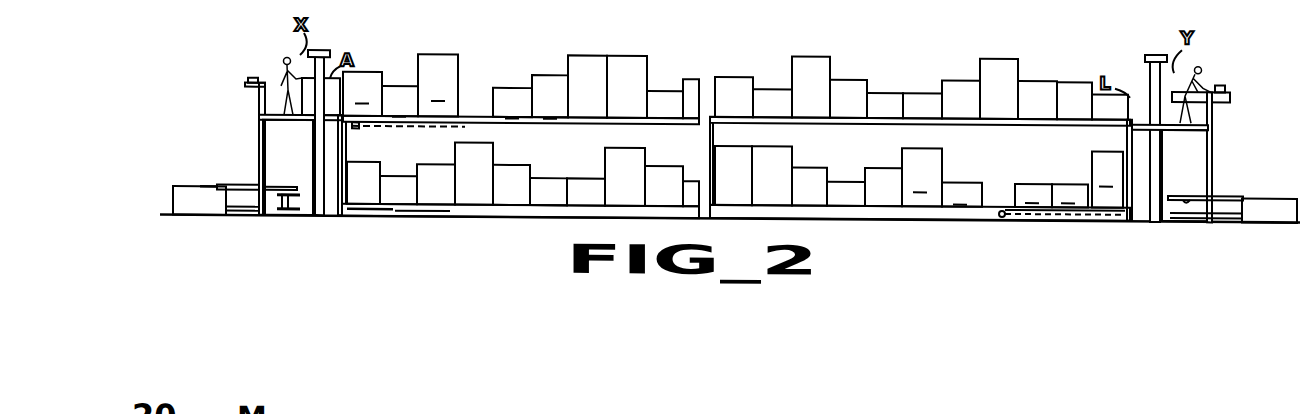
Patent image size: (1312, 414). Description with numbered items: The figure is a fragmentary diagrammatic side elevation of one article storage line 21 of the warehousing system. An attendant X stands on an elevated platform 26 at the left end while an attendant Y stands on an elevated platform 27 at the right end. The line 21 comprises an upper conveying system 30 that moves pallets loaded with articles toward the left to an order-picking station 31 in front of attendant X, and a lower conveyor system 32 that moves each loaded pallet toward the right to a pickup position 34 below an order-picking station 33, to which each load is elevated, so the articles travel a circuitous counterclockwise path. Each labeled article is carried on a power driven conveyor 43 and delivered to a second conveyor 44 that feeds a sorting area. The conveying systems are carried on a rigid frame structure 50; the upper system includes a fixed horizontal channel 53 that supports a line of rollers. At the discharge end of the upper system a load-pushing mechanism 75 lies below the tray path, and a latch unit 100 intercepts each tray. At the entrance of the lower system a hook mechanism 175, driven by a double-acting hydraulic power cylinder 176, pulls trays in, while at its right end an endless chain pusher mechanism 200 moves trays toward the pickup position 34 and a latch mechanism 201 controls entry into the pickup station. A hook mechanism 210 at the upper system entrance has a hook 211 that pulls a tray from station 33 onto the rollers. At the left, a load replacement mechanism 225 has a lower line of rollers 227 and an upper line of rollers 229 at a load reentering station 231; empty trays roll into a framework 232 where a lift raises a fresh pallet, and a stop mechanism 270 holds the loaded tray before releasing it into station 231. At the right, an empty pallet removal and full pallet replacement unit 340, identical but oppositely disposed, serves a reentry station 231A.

The article storage line 21 is at (212, 128).
The elevated platform 26 is at (262, 115).
The elevated platform 27 is at (1211, 115).
The upper conveying system 30 is at (624, 120).
The order-picking station 31 is at (336, 54).
The lower conveyor system 32 is at (561, 209).
The order-picking station 33 is at (1144, 82).
The pickup position 34 is at (1170, 215).
The power driven conveyor 43 is at (274, 82).
The second conveyor 44 is at (247, 85).
The frame structure 50 is at (1118, 138).
The inwardly opening channel 53 is at (889, 121).
The load-pushing mechanism 75 is at (471, 127).
The latch unit 100 is at (364, 129).
The hook mechanism 175 is at (361, 221).
The double-acting hydraulic power cylinder 176 is at (446, 216).
The endless chain pusher mechanism 200 is at (1034, 215).
The latch mechanism 201 is at (1113, 214).
The hook mechanism 210 is at (1036, 126).
The hook 211 is at (1163, 127).
The load replacement mechanism 225 is at (200, 184).
The lower line of rollers 227 is at (253, 214).
The upper line of rollers 229 is at (240, 185).
The load reentering station 231 is at (301, 179).
The reentry station 231A is at (1180, 185).
The framework 232 is at (171, 195).
The stop mechanism 270 is at (285, 212).
The empty pallet removal and full pallet replacement unit 340 is at (1272, 222).